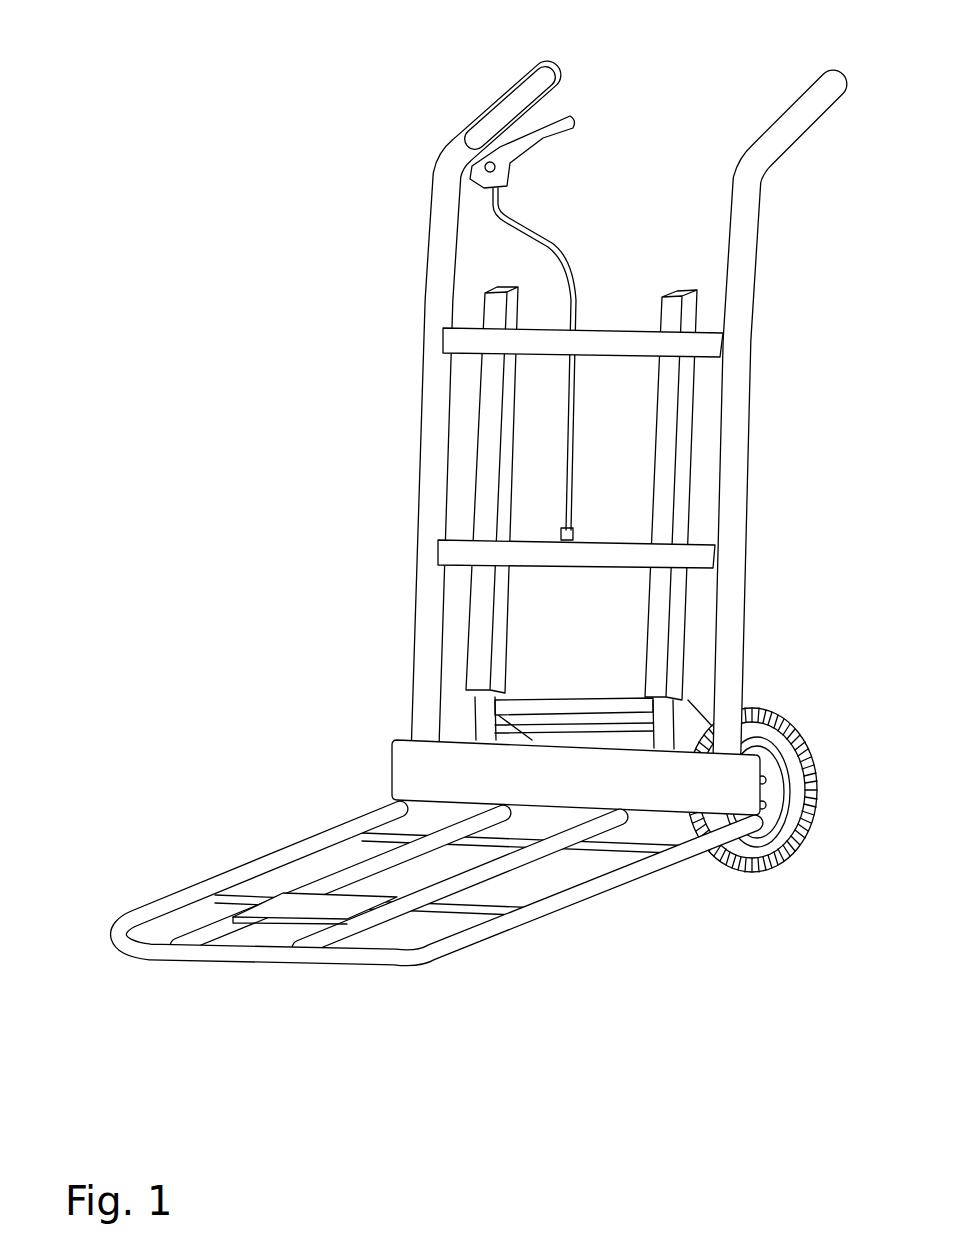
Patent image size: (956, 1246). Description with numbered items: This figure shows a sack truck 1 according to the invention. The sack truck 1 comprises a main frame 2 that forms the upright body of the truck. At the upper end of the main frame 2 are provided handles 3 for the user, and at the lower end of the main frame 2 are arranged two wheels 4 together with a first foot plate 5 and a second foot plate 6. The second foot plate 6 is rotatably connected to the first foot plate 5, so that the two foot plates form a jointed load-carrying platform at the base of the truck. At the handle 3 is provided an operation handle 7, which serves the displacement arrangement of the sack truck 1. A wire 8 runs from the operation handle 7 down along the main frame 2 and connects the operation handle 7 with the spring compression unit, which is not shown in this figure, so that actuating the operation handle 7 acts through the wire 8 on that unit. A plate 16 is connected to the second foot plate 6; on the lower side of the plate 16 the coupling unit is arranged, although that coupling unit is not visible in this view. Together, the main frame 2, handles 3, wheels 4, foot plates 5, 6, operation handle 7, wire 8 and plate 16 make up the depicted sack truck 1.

The sack truck 1 is at (475, 532).
The main frame 2 is at (740, 435).
The handle 3 is at (488, 125).
The wheel 4 is at (728, 872).
The first foot plate 5 is at (657, 840).
The second foot plate 6 is at (480, 932).
The operation handle 7 is at (563, 113).
The wire 8 is at (572, 475).
The plate 16 is at (303, 907).